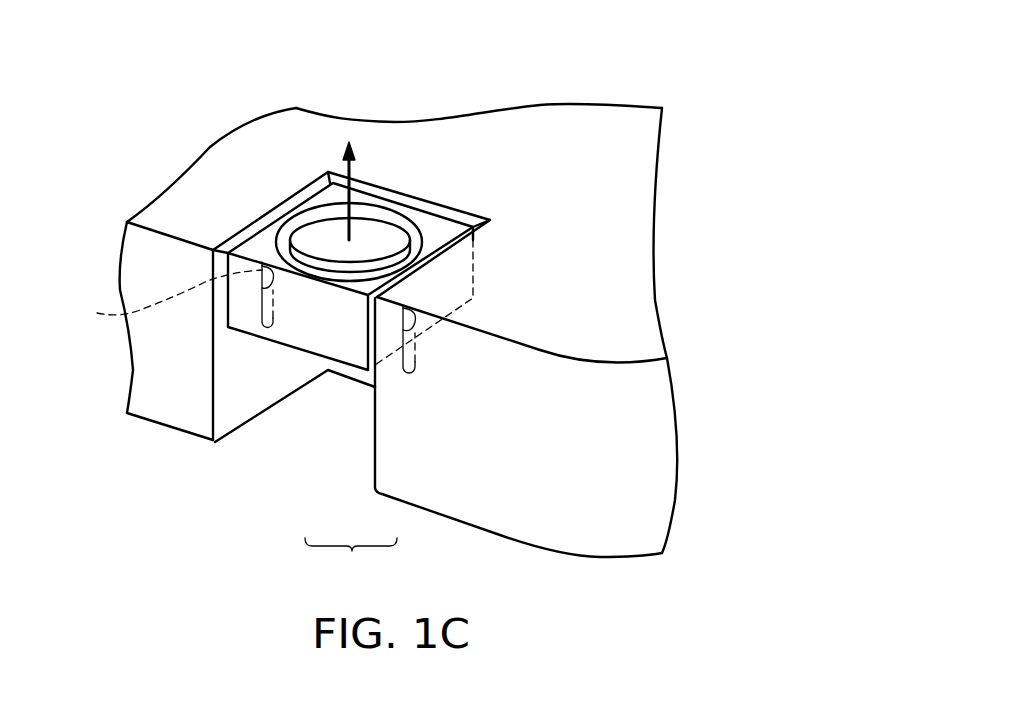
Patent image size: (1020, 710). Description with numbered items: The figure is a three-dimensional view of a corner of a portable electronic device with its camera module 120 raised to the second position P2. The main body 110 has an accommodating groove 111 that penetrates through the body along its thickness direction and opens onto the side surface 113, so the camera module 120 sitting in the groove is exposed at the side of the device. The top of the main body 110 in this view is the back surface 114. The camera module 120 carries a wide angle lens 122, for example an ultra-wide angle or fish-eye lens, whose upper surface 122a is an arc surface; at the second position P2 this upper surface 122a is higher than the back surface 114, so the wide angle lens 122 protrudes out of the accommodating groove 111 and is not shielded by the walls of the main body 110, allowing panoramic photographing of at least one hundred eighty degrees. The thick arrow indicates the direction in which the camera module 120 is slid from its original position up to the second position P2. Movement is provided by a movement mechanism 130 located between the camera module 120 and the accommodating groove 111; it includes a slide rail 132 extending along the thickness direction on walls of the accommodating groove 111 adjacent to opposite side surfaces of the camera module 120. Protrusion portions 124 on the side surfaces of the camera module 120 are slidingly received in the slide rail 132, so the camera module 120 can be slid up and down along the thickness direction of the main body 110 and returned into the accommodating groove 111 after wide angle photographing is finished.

The main body 110 is at (615, 87).
The accommodating groove 111 is at (225, 377).
The side surface 113 is at (550, 463).
The back surface 114 is at (553, 178).
The camera module 120 is at (292, 357).
The wide angle lens 122 is at (393, 240).
The upper surface 122a is at (350, 241).
The protrusion portions 124 is at (157, 298).
The movement mechanism 130 is at (351, 560).
The slide rail 132 is at (277, 280).
The second position P2 is at (268, 433).